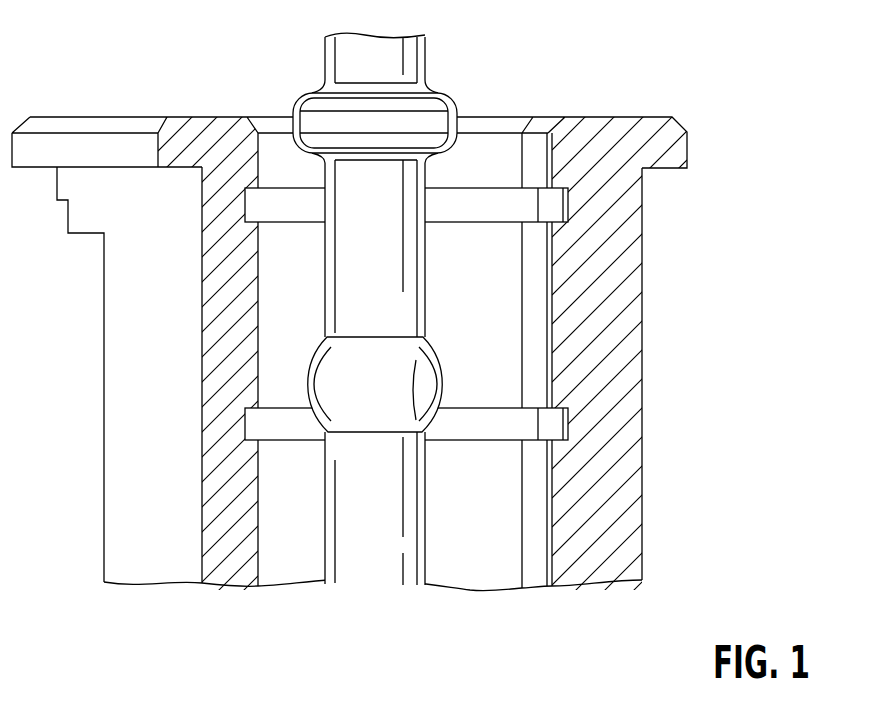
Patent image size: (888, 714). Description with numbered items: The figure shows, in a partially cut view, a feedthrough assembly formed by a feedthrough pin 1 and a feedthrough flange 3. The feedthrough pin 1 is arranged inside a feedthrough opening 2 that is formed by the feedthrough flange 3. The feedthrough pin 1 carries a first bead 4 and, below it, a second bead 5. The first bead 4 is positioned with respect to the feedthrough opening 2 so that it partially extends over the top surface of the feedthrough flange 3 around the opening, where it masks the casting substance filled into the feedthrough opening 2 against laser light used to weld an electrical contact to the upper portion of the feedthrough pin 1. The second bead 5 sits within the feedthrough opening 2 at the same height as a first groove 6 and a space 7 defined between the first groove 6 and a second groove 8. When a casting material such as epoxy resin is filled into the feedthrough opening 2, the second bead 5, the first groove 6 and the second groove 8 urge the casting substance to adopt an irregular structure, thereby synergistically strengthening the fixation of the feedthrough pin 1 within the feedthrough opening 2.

The feedthrough pin 1 is at (407, 58).
The feedthrough opening 2 is at (503, 120).
The feedthrough flange 3 is at (595, 277).
The first bead 4 is at (307, 122).
The second bead 5 is at (327, 387).
The first groove 6 is at (513, 428).
The space 7 is at (500, 331).
The second groove 8 is at (523, 211).